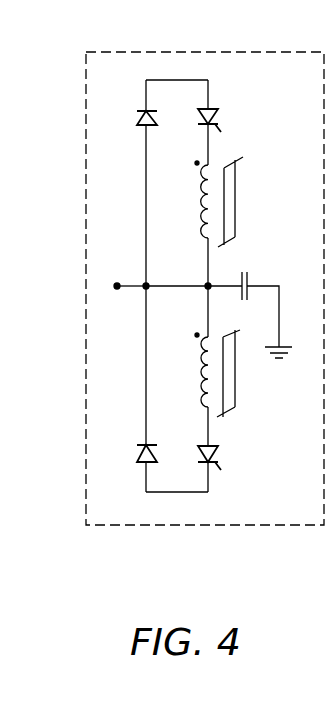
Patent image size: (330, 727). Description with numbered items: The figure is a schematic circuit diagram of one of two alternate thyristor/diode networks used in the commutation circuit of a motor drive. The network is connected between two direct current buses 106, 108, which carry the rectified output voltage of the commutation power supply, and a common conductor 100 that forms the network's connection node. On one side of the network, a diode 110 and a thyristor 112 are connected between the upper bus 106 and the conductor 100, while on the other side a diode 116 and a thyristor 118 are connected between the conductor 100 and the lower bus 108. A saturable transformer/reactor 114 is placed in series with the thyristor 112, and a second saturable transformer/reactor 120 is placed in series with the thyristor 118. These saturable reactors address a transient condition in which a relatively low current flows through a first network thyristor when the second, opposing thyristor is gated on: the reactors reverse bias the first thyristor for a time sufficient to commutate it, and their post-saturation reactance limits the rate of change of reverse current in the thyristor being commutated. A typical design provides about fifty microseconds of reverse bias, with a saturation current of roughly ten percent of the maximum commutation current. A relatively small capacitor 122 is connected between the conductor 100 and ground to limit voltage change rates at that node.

The conductor 100 is at (115, 290).
The bus 106 is at (165, 80).
The bus 108 is at (183, 492).
The diode 110 is at (138, 115).
The thyristor 112 is at (220, 118).
The saturable transformer/reactor 114 is at (197, 192).
The diode 116 is at (137, 455).
The thyristor 118 is at (216, 452).
The saturable transformer/reactor 120 is at (200, 388).
The capacitor 122 is at (248, 277).